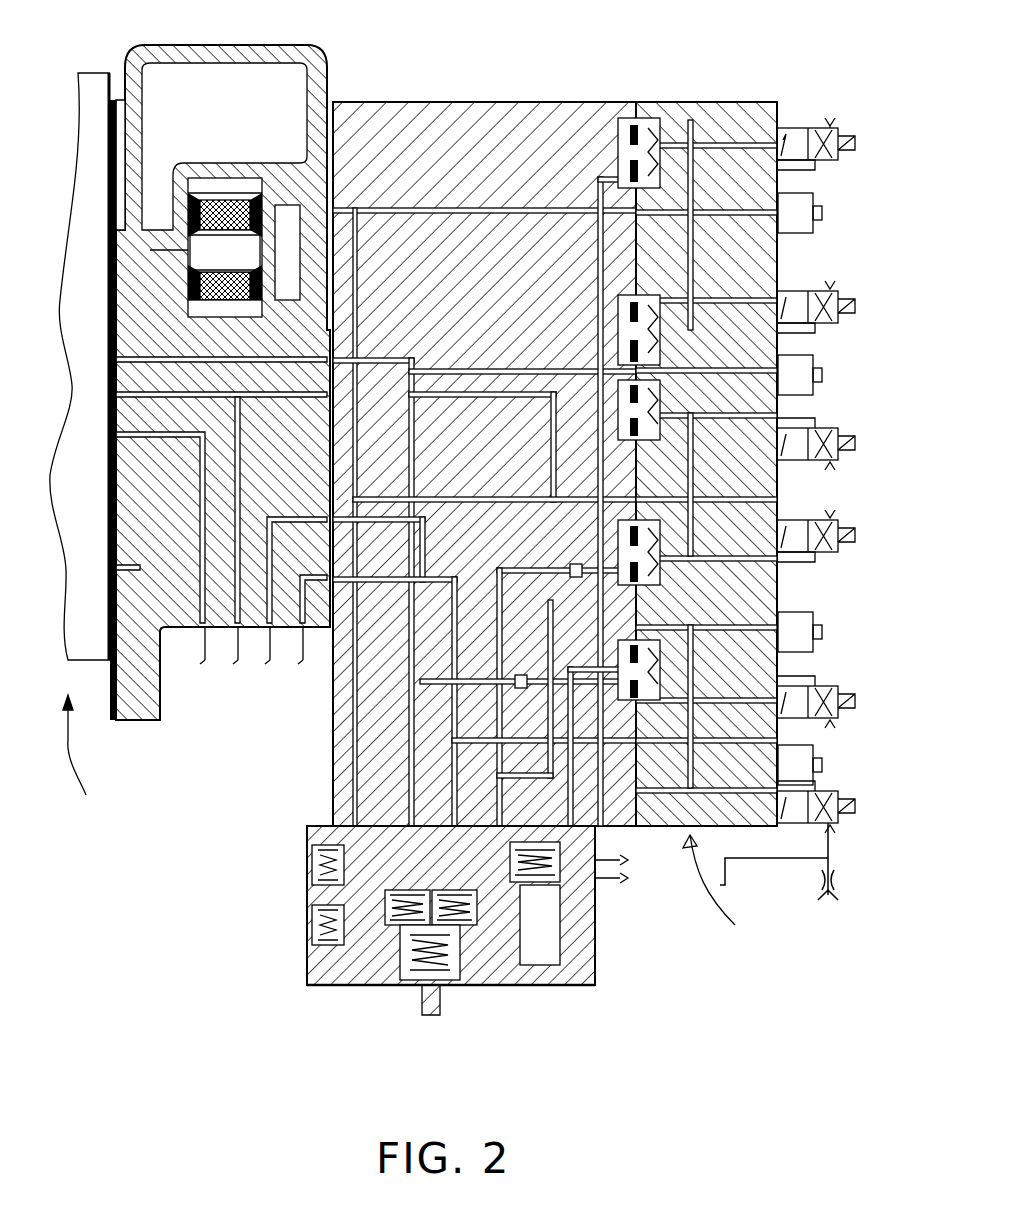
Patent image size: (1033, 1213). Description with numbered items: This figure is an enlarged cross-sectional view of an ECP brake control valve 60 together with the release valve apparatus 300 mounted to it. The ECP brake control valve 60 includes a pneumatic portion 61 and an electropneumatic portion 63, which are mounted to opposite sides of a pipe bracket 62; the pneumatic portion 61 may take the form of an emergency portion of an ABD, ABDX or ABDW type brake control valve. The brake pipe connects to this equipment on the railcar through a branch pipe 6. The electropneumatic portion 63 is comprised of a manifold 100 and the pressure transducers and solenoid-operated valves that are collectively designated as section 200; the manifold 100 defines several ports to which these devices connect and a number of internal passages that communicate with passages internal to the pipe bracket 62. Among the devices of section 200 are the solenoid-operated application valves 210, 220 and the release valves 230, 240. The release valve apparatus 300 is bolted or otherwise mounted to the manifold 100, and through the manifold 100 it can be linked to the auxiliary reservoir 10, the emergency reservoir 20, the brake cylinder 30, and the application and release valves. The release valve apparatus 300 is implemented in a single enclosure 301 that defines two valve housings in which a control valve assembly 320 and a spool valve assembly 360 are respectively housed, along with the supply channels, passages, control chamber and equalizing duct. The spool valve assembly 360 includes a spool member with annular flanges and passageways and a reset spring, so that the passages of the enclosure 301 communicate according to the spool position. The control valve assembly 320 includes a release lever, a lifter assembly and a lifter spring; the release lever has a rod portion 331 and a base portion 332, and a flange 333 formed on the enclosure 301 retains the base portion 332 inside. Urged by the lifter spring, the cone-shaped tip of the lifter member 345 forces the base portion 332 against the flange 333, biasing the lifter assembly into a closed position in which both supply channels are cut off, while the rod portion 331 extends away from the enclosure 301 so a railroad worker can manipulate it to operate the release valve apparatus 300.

The branch pipe 6 is at (85, 730).
The auxiliary reservoir 10 is at (303, 660).
The emergency reservoir 20 is at (238, 660).
The brake cylinder 30 is at (205, 660).
The ECP brake control valve 60 is at (91, 760).
The pneumatic portion 61 is at (82, 108).
The pipe bracket 62 is at (318, 56).
The electropneumatic portion 63 is at (721, 890).
The manifold 100 is at (482, 102).
The section 200 is at (712, 102).
The solenoid-operated application valve 210 is at (820, 428).
The solenoid-operated application valve 220 is at (830, 552).
The release valve 230 is at (828, 685).
The release valve 240 is at (828, 791).
The release valve apparatus 300 is at (492, 964).
The enclosure 301 is at (597, 968).
The control valve assembly 320 is at (378, 960).
The rod portion 331 is at (432, 1020).
The base portion 332 is at (455, 975).
The flange 333 is at (400, 975).
The lifter member 345 is at (440, 1000).
The spool valve assembly 360 is at (598, 908).